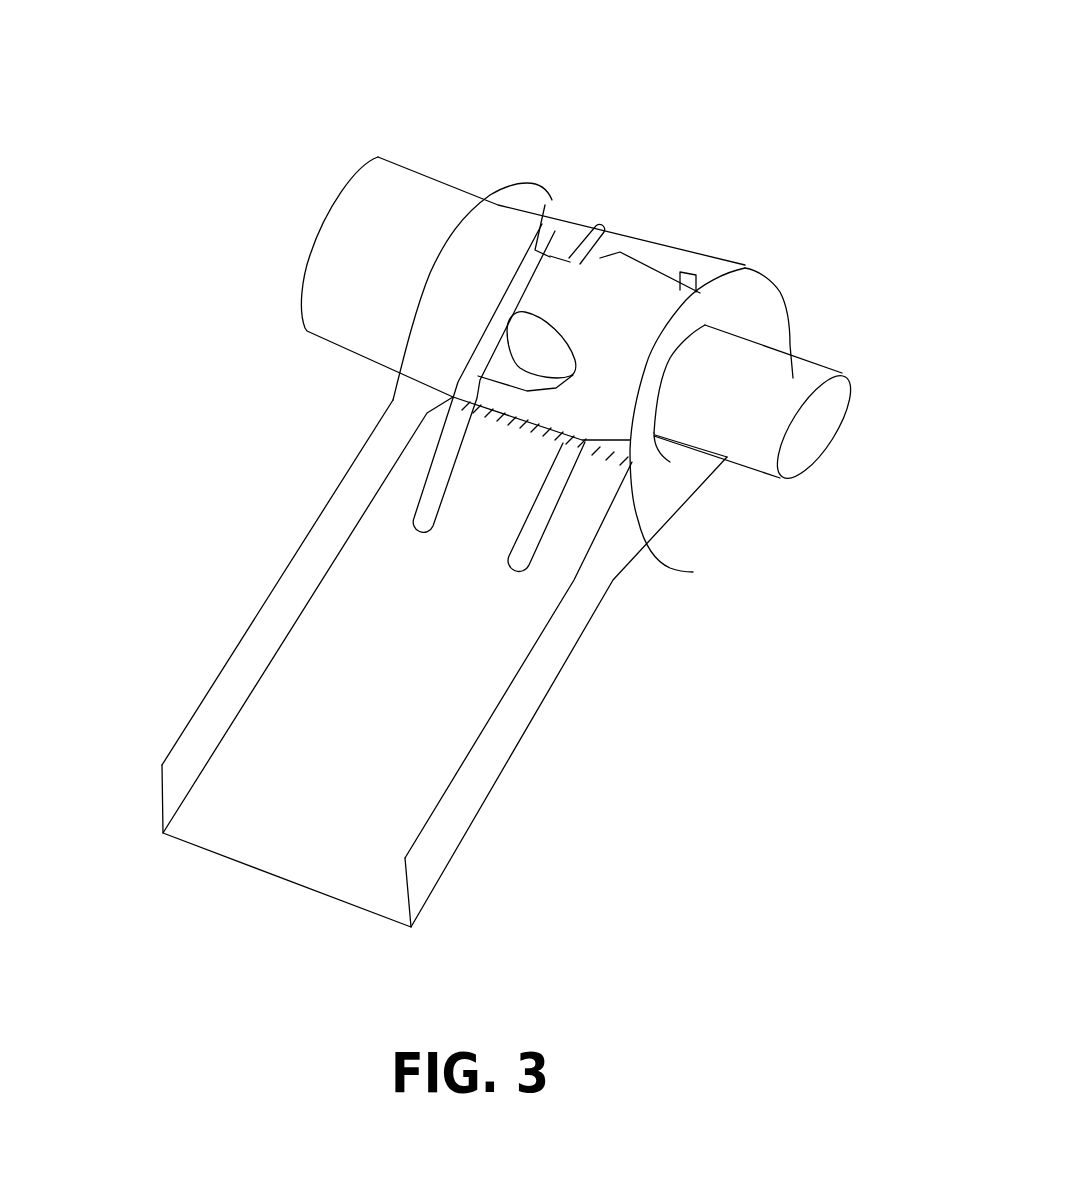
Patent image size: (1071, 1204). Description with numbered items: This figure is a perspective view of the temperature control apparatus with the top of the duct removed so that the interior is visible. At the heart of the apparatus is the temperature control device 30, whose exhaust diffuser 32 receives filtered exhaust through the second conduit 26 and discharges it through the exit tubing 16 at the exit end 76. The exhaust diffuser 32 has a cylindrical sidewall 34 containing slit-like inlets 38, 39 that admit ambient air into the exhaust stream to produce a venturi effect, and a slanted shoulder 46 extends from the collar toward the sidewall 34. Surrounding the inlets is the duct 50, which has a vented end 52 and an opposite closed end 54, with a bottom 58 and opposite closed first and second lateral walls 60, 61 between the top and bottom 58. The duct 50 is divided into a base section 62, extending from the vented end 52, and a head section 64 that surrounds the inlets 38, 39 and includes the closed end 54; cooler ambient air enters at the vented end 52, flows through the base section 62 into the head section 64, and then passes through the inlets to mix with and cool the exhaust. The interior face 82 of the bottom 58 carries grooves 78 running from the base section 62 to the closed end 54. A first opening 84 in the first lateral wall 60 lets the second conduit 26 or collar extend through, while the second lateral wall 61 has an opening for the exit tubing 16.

The exit tubing 16 is at (405, 203).
The temperature control device 30 is at (493, 232).
The exit end 76 is at (550, 228).
The inlet 39 is at (583, 303).
The sidewall 34 is at (647, 303).
The exhaust diffuser 32 is at (682, 285).
The closed end 54 is at (722, 270).
The head section 64 is at (766, 322).
The second conduit 26 is at (796, 378).
The inlet 38 is at (520, 348).
The bottom 58 is at (410, 722).
The grooves 78 is at (538, 527).
The slanted shoulder 46 is at (650, 560).
The first opening 84 is at (656, 440).
The second lateral wall 61 is at (310, 573).
The duct 50 is at (223, 688).
The first lateral wall 60 is at (545, 663).
The base section 62 is at (452, 820).
The vented end 52 is at (215, 858).
The interior face 82 is at (339, 823).